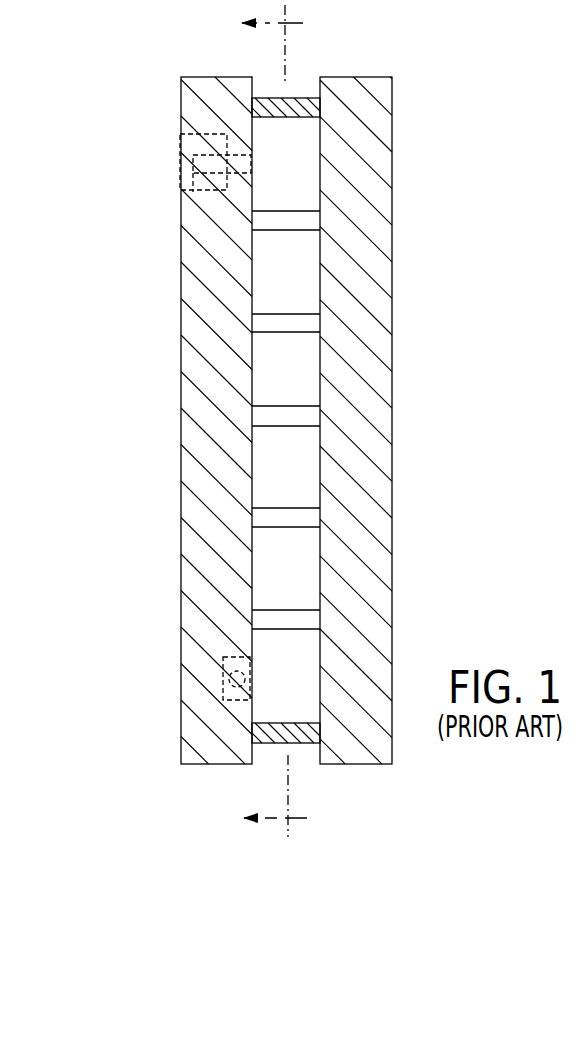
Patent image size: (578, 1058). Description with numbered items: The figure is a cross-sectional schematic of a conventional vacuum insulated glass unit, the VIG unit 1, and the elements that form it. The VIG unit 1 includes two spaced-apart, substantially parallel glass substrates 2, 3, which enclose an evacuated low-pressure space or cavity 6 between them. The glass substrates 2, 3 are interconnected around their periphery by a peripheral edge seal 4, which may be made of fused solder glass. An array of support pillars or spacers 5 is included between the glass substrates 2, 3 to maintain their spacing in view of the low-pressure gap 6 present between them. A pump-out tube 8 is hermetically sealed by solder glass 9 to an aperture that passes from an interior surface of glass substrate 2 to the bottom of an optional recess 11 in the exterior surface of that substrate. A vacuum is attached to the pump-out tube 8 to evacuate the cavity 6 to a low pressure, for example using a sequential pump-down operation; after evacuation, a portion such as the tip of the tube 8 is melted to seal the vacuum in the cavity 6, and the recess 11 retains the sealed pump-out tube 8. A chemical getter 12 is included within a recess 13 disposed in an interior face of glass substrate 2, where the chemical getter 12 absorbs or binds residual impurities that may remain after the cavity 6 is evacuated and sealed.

The VIG unit 1 is at (305, 431).
The glass substrate 2 is at (181, 473).
The glass substrate 3 is at (363, 345).
The peripheral edge seal 4 is at (298, 97).
The support pillars/spacers 5 is at (297, 623).
The evacuated low-pressure space/cavity 6 is at (278, 420).
The pump-out tube 8 is at (197, 167).
The solder glass 9 is at (222, 146).
The recess 11 is at (194, 198).
The chemical getter 12 is at (232, 676).
The recess 13 is at (229, 707).